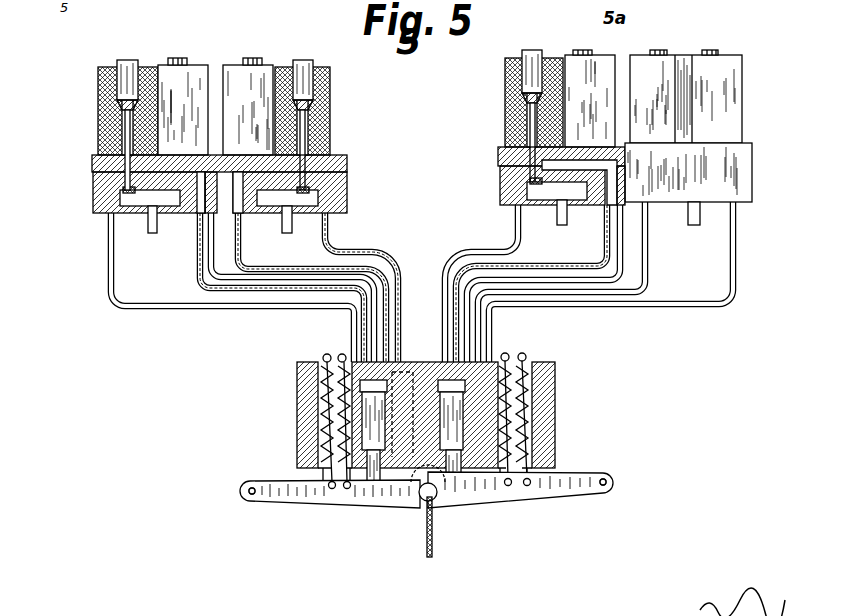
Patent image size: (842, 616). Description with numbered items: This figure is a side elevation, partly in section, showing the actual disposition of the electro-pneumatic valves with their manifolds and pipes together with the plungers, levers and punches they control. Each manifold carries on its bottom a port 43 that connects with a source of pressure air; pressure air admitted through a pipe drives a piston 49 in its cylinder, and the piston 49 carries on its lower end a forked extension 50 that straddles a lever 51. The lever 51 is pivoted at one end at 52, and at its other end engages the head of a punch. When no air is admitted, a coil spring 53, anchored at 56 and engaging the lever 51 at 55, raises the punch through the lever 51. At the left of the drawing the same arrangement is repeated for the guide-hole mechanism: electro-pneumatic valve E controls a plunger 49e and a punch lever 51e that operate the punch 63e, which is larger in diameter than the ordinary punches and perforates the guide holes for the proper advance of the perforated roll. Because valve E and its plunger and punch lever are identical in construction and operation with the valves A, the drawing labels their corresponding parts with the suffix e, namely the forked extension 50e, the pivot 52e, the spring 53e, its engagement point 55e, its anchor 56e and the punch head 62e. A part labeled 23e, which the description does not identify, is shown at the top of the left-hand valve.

The solenoid plunger 23e is at (130, 62).
The port 43 is at (692, 228).
The plunger 49e is at (370, 432).
The piston 49 is at (462, 421).
The valve stem 50e is at (385, 482).
The forked extension 50 is at (461, 482).
The punch lever 51e is at (366, 505).
The lever 51 is at (522, 498).
The pivot pin 52e is at (249, 495).
The pivot 52 is at (606, 480).
The valve casing 53e is at (297, 399).
The coil spring 53 is at (555, 399).
The pin 55e is at (331, 489).
The spring engagement point 55 is at (529, 485).
The spring pressed plunger 56e is at (327, 354).
The spring anchor 56 is at (552, 341).
The pivot 62e is at (426, 499).
The punch 63e is at (433, 547).